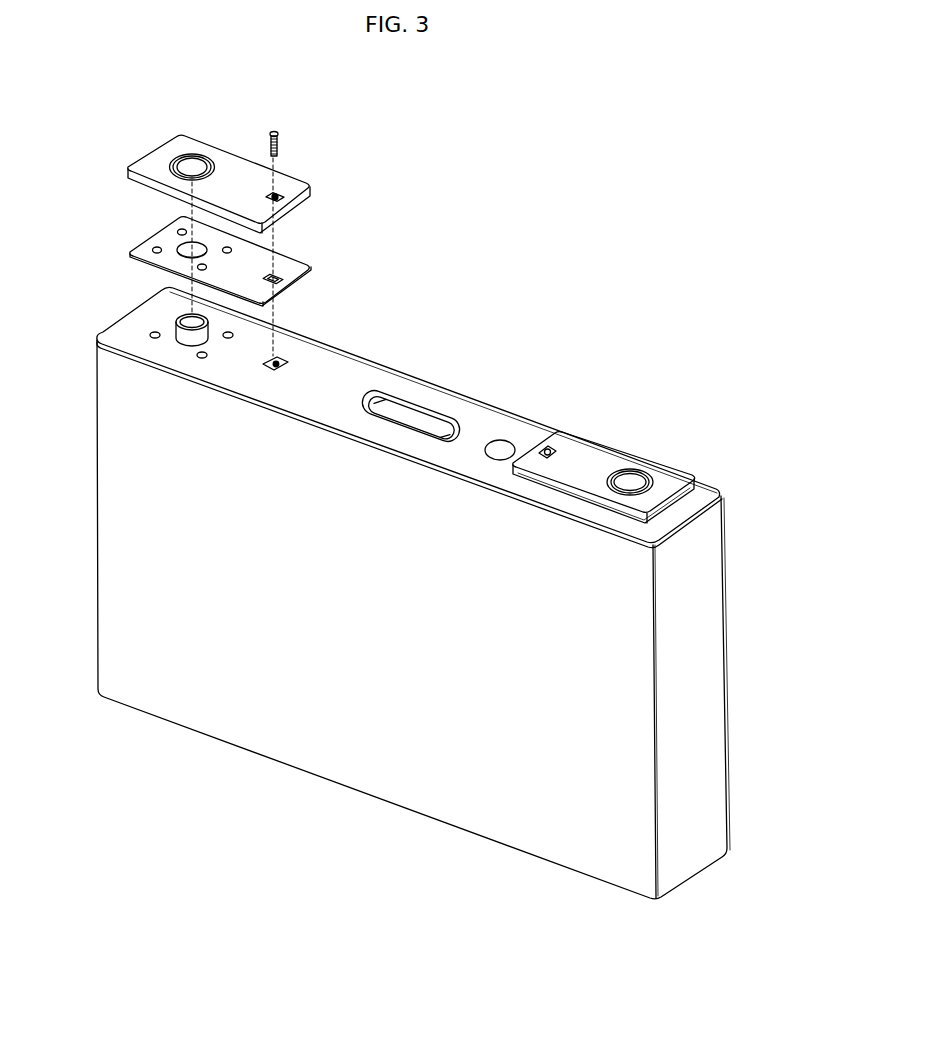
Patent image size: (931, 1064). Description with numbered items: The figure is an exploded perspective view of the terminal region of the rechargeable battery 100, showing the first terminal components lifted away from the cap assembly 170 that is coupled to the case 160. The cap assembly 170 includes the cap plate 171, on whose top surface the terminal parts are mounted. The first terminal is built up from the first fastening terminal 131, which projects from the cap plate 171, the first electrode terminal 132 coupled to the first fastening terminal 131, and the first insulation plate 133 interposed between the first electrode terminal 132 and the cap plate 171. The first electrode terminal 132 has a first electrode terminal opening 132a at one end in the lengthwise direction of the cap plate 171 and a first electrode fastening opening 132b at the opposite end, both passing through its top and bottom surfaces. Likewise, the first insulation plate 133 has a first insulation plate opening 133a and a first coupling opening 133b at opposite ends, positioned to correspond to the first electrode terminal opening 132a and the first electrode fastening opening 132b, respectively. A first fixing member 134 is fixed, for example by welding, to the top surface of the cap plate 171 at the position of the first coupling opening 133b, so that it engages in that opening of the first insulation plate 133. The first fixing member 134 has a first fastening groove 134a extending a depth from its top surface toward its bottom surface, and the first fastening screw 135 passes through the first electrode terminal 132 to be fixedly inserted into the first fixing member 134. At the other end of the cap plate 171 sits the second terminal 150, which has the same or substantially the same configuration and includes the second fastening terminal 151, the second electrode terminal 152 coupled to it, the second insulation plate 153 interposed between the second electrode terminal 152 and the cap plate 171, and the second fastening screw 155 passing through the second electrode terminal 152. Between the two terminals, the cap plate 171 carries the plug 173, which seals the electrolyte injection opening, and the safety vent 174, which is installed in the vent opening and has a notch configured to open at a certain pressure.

The rechargeable battery 100 is at (612, 262).
The first fastening terminal 131 is at (185, 332).
The first electrode terminal 132 is at (158, 152).
The first electrode terminal opening 132a is at (190, 163).
The first electrode fastening opening 132b is at (276, 194).
The first insulation plate 133 is at (309, 270).
The first insulation plate opening 133a is at (181, 245).
The first coupling opening 133b is at (280, 272).
The first fixing member 134 is at (271, 384).
The first fastening groove 134a is at (258, 360).
The first fastening screw 135 is at (275, 130).
The second terminal 150 is at (727, 370).
The second fastening terminal 151 is at (635, 478).
The second electrode terminal 152 is at (602, 452).
The second insulation plate 153 is at (695, 488).
The second fastening screw 155 is at (553, 443).
The case 160 is at (712, 663).
The cap assembly 170 is at (530, 296).
The cap plate 171 is at (359, 358).
The plug 173 is at (500, 447).
The safety vent 174 is at (407, 406).